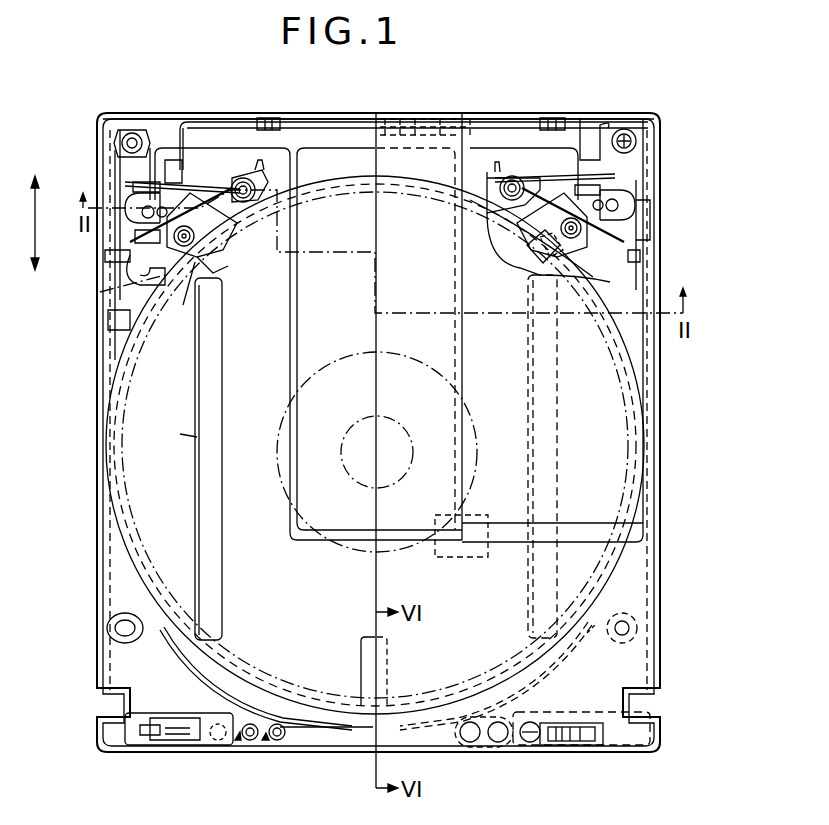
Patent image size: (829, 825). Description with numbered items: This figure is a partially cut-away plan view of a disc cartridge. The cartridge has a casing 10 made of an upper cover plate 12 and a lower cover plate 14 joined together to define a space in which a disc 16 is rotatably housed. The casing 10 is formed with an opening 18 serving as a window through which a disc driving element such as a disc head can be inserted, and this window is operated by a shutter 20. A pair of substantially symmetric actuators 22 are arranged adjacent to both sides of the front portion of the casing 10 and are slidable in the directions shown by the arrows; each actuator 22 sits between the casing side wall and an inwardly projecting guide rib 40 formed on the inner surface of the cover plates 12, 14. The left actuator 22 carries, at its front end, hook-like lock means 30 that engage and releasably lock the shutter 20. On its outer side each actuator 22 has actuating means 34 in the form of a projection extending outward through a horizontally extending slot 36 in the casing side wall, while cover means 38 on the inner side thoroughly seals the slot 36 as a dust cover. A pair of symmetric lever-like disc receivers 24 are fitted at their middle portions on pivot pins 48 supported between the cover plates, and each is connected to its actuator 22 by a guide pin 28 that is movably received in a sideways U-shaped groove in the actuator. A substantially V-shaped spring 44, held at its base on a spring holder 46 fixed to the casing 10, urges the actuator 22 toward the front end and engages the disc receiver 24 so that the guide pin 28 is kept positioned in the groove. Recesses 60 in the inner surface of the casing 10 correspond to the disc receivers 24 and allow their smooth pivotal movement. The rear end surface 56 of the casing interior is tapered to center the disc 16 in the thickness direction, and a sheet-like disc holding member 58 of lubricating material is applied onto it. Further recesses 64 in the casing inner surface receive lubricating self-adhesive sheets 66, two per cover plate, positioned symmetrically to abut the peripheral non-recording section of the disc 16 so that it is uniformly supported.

The casing 10 is at (662, 114).
The upper cover plate 12 is at (655, 597).
The lower cover plate 14 is at (113, 665).
The disc 16 is at (108, 498).
The opening 18 is at (425, 115).
The shutter 20 is at (455, 363).
The actuator 22 is at (117, 183).
The disc receiver 24 is at (228, 250).
The guide pin 28 is at (179, 297).
The lock means 30 is at (177, 117).
The actuating means 34 is at (107, 193).
The slot 36 is at (105, 266).
The cover means 38 is at (118, 287).
The guide rib 40 is at (135, 338).
The V-shaped spring 44 is at (235, 177).
The spring holder 46 is at (510, 182).
The pivot pin 48 is at (560, 208).
The rear end surface 56 is at (360, 730).
The disc holding member 58 is at (360, 672).
The recess 60 is at (520, 257).
The recess 64 is at (197, 478).
The lubricating self-adhesive sheet 66 is at (585, 465).